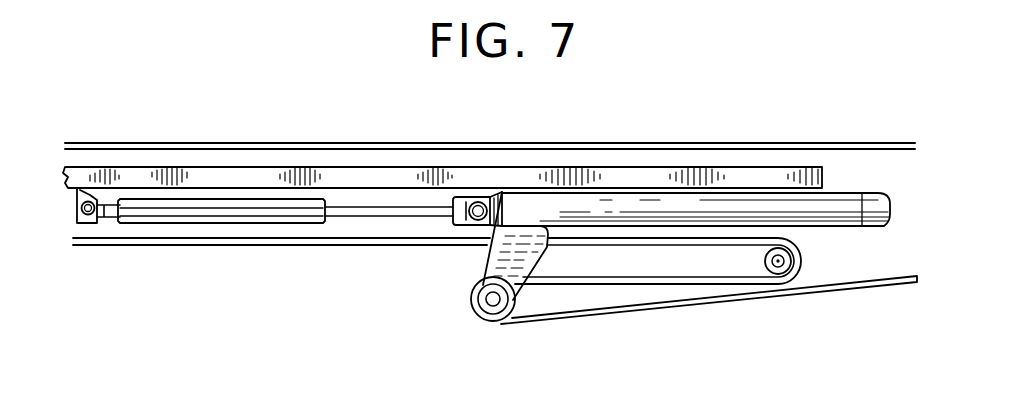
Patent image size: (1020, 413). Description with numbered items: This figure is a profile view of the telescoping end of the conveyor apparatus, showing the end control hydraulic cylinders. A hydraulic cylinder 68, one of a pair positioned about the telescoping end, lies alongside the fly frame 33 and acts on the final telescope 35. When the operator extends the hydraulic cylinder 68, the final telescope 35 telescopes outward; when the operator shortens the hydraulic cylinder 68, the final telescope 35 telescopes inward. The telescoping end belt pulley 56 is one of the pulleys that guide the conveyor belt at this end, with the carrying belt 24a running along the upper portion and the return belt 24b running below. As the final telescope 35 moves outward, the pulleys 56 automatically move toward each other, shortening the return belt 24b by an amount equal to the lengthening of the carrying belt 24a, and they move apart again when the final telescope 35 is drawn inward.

The carrying belt 24a is at (705, 140).
The fly frame 33 is at (345, 178).
The hydraulic cylinder 68 is at (221, 223).
The telescoping end belt pulley 56 is at (470, 300).
The return belt 24b is at (616, 306).
The final telescope 35 is at (862, 212).